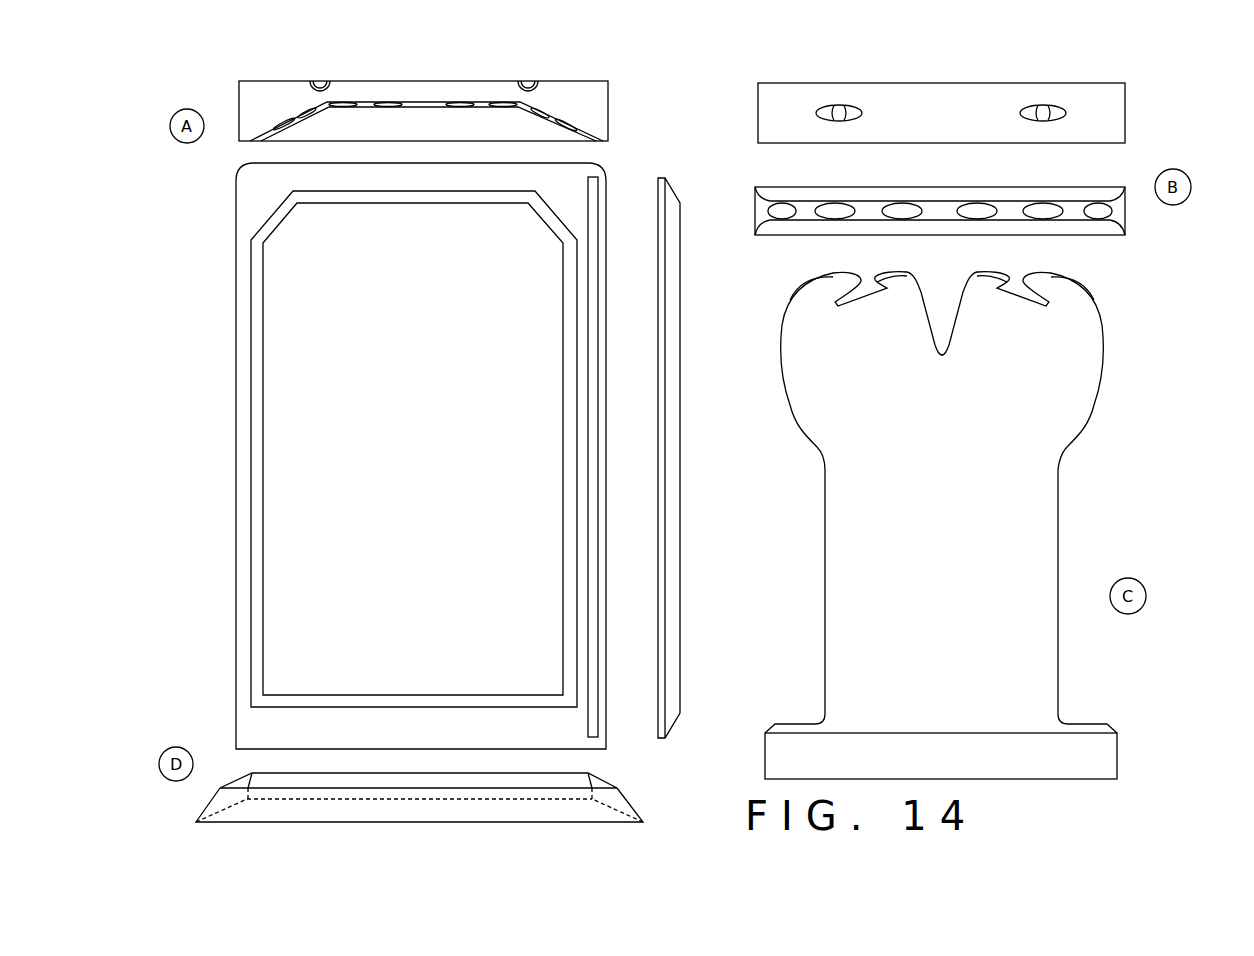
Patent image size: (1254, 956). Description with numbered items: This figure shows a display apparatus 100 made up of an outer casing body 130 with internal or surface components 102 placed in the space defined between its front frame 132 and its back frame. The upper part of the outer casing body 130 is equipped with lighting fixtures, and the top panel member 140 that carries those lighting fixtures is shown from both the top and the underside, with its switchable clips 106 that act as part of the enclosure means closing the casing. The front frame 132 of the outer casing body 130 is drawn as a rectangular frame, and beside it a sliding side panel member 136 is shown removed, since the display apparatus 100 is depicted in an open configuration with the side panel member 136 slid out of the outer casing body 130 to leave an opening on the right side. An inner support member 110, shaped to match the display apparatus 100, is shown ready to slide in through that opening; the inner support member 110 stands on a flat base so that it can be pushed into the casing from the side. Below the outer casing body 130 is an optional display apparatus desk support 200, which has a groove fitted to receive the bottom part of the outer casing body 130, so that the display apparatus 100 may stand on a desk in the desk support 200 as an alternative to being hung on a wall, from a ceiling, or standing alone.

The display apparatus 100 is at (212, 448).
The internal or surface components 102 is at (1097, 213).
The switchable clips 106 is at (318, 79).
The inner support member 110 is at (1008, 512).
The outer casing body 130 is at (222, 372).
The front frame 132 is at (270, 190).
The side panel member 136 is at (674, 202).
The top panel member 140 is at (572, 70).
The display apparatus desk support 200 is at (608, 807).